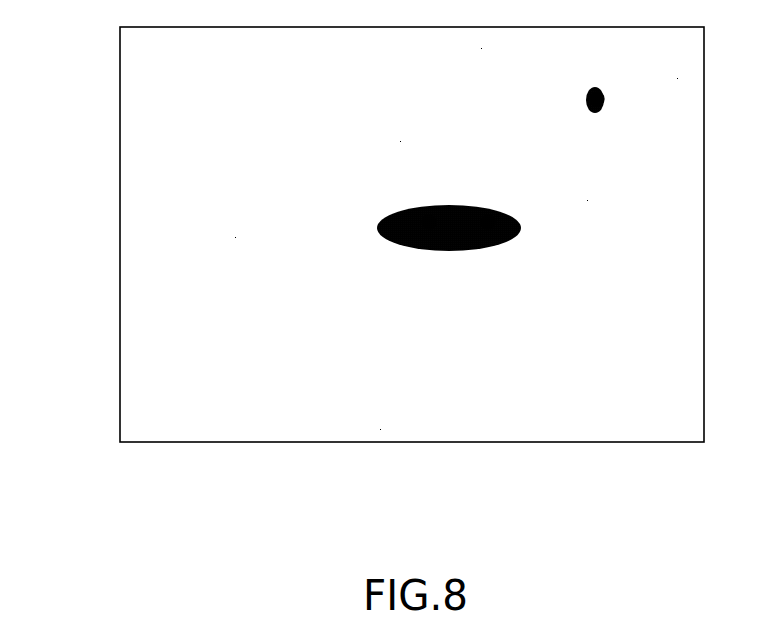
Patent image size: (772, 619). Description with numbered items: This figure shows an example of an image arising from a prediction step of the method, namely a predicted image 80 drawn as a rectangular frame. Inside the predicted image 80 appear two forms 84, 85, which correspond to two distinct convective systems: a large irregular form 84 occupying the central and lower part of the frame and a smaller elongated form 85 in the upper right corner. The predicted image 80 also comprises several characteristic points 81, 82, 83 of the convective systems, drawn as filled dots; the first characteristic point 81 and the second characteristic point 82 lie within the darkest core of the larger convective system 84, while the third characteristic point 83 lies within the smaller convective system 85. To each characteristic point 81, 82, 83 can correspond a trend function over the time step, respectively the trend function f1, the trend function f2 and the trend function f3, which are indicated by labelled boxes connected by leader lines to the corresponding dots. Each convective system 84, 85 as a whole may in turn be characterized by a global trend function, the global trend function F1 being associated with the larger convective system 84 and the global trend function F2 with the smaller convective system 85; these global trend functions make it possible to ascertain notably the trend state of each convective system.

The predicted image 80 is at (120, 240).
The characteristic point 81 is at (429, 222).
The characteristic point 82 is at (488, 222).
The characteristic point 83 is at (597, 100).
The convective system 84 is at (462, 393).
The convective system 85 is at (664, 94).
The trend function f1 is at (429, 222).
The trend function f2 is at (488, 222).
The trend function f3 is at (597, 99).
The global trend function F1 is at (300, 298).
The global trend function F2 is at (495, 62).